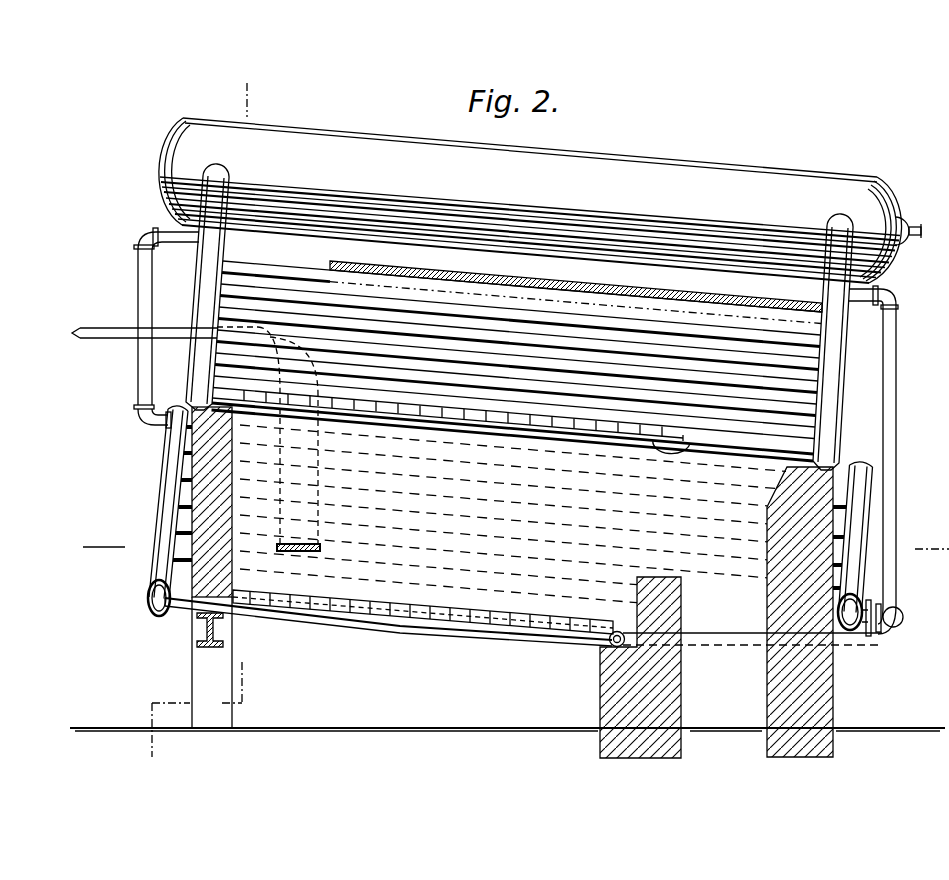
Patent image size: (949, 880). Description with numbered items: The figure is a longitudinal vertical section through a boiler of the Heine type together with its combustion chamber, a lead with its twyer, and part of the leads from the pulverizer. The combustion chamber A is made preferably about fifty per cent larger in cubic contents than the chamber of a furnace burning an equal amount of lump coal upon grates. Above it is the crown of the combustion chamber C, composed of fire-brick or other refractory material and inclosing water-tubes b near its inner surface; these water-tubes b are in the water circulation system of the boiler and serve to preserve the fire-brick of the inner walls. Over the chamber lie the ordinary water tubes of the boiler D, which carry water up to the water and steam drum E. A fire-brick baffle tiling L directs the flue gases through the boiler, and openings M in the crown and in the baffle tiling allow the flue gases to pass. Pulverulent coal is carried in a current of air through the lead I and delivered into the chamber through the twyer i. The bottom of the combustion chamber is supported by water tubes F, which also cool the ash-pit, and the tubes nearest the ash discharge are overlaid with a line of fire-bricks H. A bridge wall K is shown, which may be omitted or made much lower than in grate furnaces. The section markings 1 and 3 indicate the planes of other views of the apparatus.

The water and steam drum E is at (684, 172).
The openings in the crown and fire-brick baffle tiling M is at (519, 317).
The water tubes of the boiler D is at (298, 292).
The fire-brick baffle tiling L is at (492, 284).
The lead I is at (82, 331).
The water-tubes b is at (478, 426).
The crown of the combustion chamber C is at (688, 446).
The combustion chamber A is at (537, 582).
The twyer i is at (295, 552).
The line of fire-bricks H is at (308, 603).
The water tubes F is at (394, 630).
The bridge wall K is at (640, 667).
The section line 1 is at (106, 534).
The section line 3 is at (238, 97).